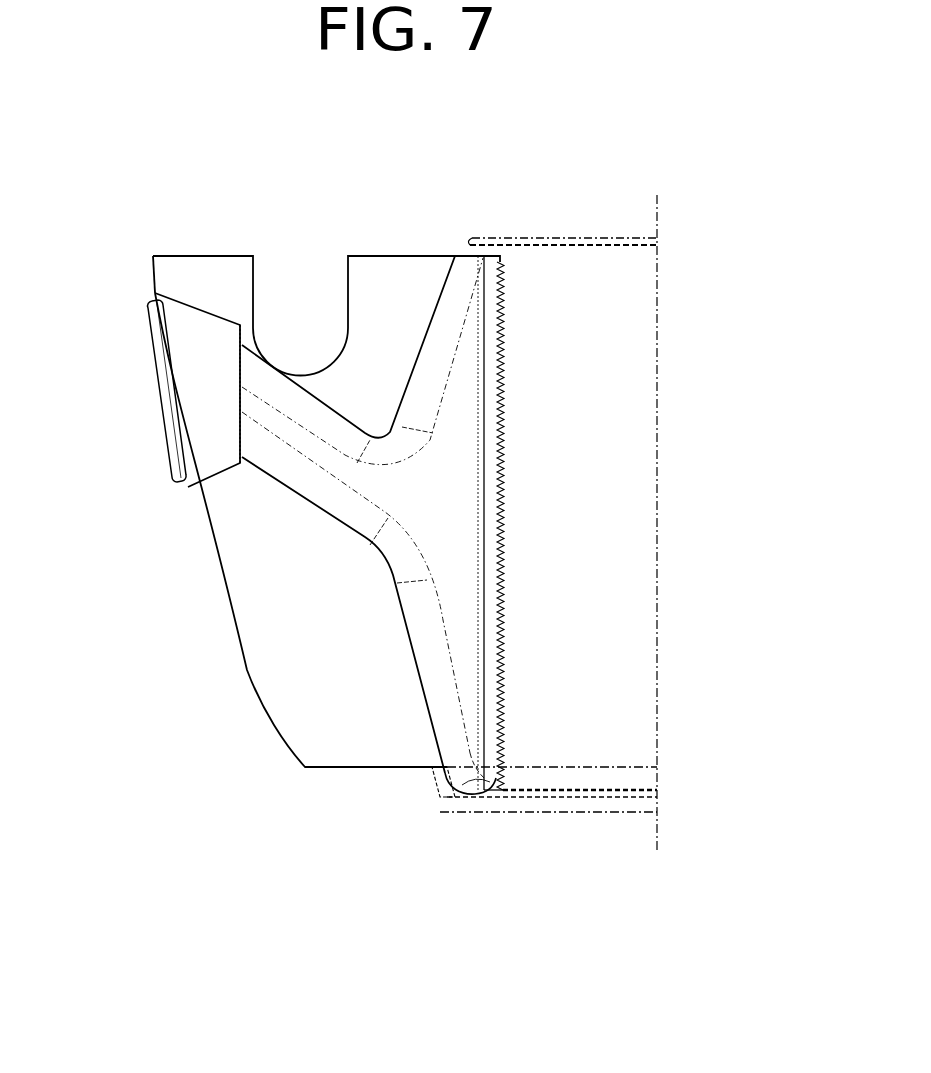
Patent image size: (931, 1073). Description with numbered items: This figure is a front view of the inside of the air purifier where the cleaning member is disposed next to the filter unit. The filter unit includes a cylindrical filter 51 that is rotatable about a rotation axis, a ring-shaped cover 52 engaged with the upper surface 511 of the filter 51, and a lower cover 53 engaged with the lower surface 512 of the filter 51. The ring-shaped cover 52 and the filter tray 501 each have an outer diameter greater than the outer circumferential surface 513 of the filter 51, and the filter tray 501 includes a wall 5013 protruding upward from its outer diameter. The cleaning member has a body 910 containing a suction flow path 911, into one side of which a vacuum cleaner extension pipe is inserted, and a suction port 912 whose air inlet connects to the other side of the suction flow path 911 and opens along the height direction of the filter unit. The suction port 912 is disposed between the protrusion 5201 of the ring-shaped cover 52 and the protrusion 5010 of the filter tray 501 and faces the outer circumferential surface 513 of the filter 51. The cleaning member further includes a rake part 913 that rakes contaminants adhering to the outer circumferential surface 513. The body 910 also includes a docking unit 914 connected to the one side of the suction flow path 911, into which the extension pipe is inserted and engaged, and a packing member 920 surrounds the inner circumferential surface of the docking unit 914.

The body 910 is at (200, 256).
The suction flow path 911 is at (334, 383).
The suction port 912 is at (478, 781).
The rake part 913 is at (510, 360).
The docking unit 914 is at (183, 366).
The packing member 920 is at (152, 327).
The filter 51 is at (748, 263).
The upper surface 511 is at (635, 247).
The lower surface 512 is at (615, 790).
The outer circumferential surface 513 is at (623, 435).
The ring-shaped cover 52 is at (615, 237).
The protrusion 5201 is at (518, 228).
The lower cover 53 is at (657, 797).
The filter tray 501 is at (657, 812).
The protrusion 5010 is at (503, 820).
The wall 5013 is at (432, 776).